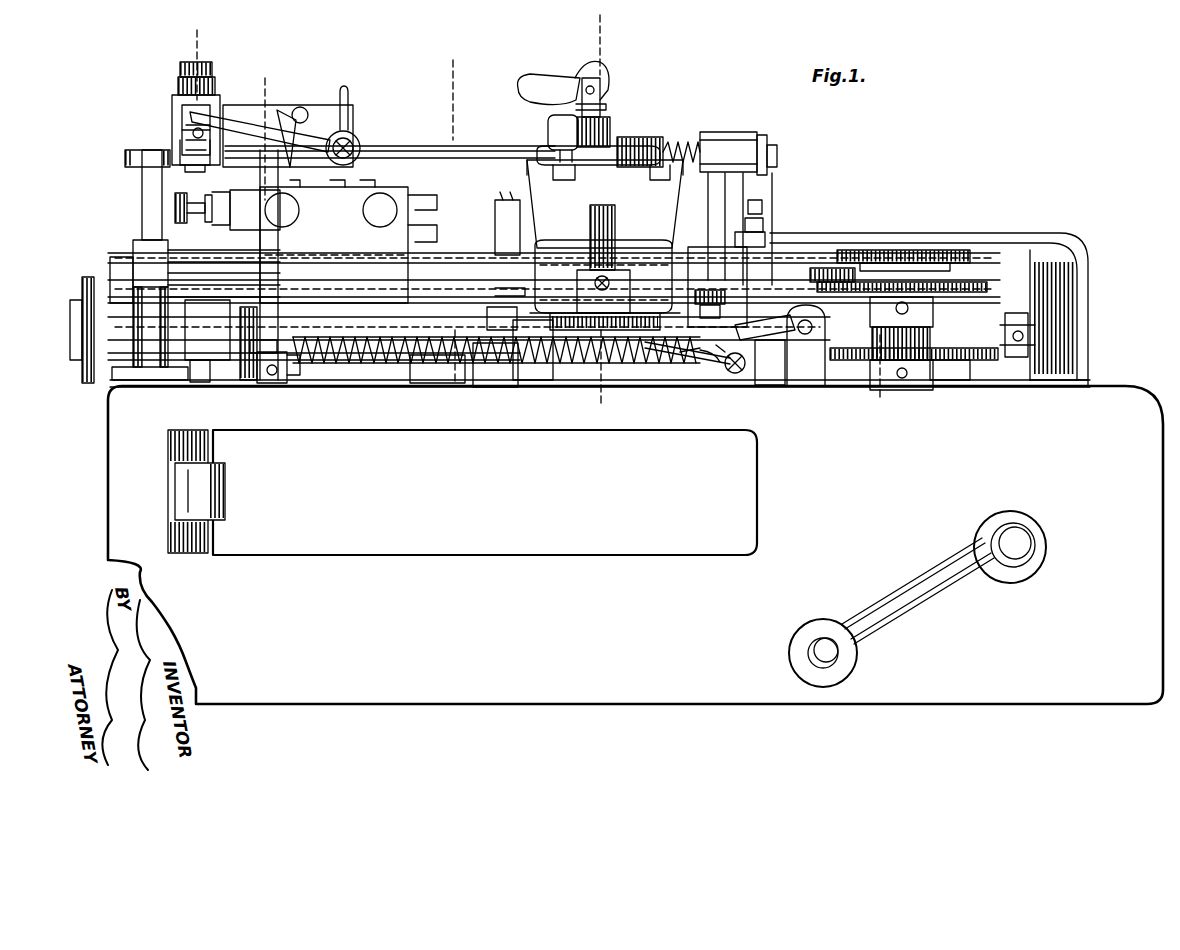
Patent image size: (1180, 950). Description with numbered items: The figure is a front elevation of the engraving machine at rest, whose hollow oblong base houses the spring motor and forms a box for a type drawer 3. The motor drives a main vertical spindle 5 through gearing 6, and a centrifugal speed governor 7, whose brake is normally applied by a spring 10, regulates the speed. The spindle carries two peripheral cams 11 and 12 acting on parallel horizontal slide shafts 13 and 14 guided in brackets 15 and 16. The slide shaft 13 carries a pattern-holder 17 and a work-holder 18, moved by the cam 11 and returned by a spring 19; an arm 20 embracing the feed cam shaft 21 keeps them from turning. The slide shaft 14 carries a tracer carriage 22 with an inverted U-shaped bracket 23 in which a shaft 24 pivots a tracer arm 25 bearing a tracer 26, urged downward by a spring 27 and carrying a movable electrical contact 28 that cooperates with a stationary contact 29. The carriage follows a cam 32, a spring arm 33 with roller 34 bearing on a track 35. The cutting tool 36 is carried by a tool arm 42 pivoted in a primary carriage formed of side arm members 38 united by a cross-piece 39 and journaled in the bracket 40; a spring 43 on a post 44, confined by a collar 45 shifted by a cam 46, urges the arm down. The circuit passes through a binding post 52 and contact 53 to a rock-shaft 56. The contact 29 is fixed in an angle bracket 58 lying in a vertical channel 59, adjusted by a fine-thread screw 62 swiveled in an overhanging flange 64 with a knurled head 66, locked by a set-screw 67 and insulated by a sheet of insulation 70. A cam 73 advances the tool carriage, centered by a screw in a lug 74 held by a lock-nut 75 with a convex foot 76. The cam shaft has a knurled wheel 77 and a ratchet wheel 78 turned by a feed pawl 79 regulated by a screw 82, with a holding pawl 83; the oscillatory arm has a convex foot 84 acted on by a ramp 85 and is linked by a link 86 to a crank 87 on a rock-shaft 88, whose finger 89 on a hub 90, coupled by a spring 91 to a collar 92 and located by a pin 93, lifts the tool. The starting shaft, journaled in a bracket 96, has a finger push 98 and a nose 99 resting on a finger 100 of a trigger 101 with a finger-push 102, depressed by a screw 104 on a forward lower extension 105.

The type drawer 3 is at (485, 492).
The main vertical spindle 5 is at (739, 217).
The gearing 6 is at (453, 232).
The centrifugal speed governor 7 is at (268, 218).
The spring 10 is at (227, 121).
The cam 11 is at (985, 280).
The cam 12 is at (985, 362).
The slide shaft 13 is at (465, 262).
The slide shaft 14 is at (203, 365).
The bracket 15 is at (133, 242).
The bracket 16 is at (717, 287).
The pattern-holder 17 is at (348, 241).
The work-holder 18 is at (605, 245).
The spring 19 is at (430, 368).
The arm 20 is at (388, 380).
The feed cam shaft 21 is at (455, 322).
The tracer carriage 22 is at (228, 241).
The inverted U-shaped bracket 23 is at (352, 92).
The shaft 24 is at (365, 135).
The tracer arm 25 is at (248, 118).
The tracer 26 is at (285, 112).
The spring 27 is at (300, 108).
The movable electrical contact 28 is at (205, 128).
The stationary contact 29 is at (182, 158).
The cam 32 is at (225, 385).
The spring arm 33 is at (290, 370).
The roller 34 is at (270, 385).
The track 35 is at (350, 385).
The engraving or cutting tool 36 is at (548, 148).
The side arm members 38 is at (745, 190).
The cross-piece 39 is at (725, 210).
The bracket 40 is at (528, 375).
The tool arm 42 is at (612, 128).
The spring 43 is at (605, 105).
The post 44 is at (570, 75).
The collar 45 is at (548, 80).
The cam 46 is at (605, 85).
The binding post 52 is at (1025, 335).
The contact 53 is at (945, 385).
The rock-shaft 56 is at (806, 335).
The angle bracket 58 is at (186, 165).
The vertical channel 59 is at (212, 98).
The fine-thread screw 62 is at (175, 105).
The overhanging flange 64 is at (178, 80).
The knurled head 66 is at (210, 62).
The set-screw 67 is at (195, 133).
The sheet of insulation 70 is at (178, 142).
The cam 73 is at (495, 385).
The lug 74 is at (495, 215).
The lock-nut 75 is at (505, 205).
The convex foot 76 is at (493, 300).
The knurled wheel 77 is at (85, 277).
The ratchet wheel 78 is at (765, 385).
The feed pawl 79 is at (765, 245).
The screw 82 is at (765, 226).
The holding pawl 83 is at (762, 207).
The convex foot 84 is at (850, 370).
The ramp or face cam 85 is at (933, 325).
The link 86 is at (780, 190).
The crank 87 is at (772, 140).
The rock-shaft 88 is at (466, 150).
The finger 89 is at (585, 168).
The hub 90 is at (660, 138).
The spring 91 is at (690, 142).
The collar 92 is at (715, 132).
The pin 93 is at (640, 165).
The bracket 96 is at (790, 385).
The finger push 98 is at (875, 250).
The nose 99 is at (735, 373).
The finger 100 is at (750, 325).
The trigger 101 is at (715, 365).
The finger-push 102 is at (655, 360).
The screw 104 is at (698, 355).
The forward lower extension 105 is at (722, 358).